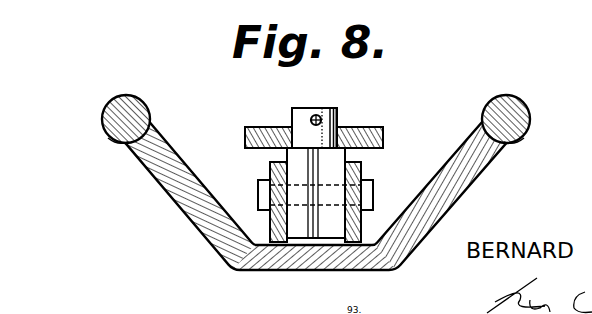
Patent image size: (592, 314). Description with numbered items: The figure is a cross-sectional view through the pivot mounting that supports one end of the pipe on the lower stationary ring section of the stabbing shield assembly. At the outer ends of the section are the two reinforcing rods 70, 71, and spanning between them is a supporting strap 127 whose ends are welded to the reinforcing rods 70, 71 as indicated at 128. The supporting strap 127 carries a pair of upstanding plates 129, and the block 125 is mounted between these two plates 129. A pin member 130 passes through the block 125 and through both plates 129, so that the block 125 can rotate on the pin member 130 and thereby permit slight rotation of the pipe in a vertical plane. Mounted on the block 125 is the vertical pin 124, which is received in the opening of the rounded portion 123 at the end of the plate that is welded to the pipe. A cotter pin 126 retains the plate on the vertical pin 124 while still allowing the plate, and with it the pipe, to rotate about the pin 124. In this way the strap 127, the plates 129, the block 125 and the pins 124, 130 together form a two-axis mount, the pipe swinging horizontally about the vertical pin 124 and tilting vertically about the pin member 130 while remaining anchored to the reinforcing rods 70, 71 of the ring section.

The reinforcing rod 70 is at (110, 118).
The reinforcing rod 71 is at (514, 115).
The rounded portion 123 is at (376, 129).
The vertical pin 124 is at (337, 119).
The block 125 is at (361, 167).
The cotter pin 126 is at (320, 116).
The supporting strap 127 is at (222, 245).
The weld 128 is at (122, 146).
The upstanding plates 129 is at (267, 220).
The pin member 130 is at (367, 195).